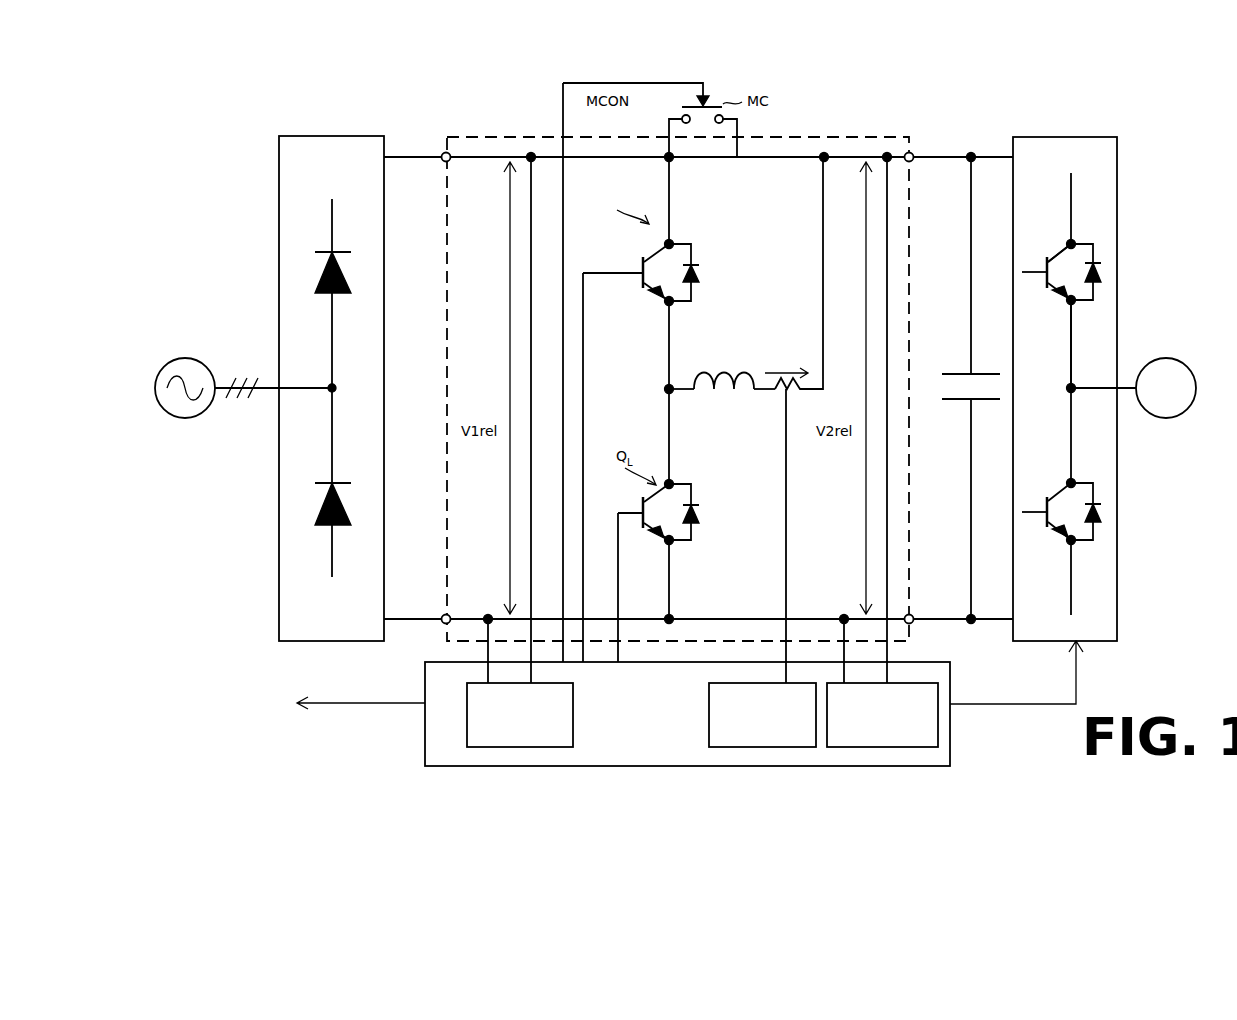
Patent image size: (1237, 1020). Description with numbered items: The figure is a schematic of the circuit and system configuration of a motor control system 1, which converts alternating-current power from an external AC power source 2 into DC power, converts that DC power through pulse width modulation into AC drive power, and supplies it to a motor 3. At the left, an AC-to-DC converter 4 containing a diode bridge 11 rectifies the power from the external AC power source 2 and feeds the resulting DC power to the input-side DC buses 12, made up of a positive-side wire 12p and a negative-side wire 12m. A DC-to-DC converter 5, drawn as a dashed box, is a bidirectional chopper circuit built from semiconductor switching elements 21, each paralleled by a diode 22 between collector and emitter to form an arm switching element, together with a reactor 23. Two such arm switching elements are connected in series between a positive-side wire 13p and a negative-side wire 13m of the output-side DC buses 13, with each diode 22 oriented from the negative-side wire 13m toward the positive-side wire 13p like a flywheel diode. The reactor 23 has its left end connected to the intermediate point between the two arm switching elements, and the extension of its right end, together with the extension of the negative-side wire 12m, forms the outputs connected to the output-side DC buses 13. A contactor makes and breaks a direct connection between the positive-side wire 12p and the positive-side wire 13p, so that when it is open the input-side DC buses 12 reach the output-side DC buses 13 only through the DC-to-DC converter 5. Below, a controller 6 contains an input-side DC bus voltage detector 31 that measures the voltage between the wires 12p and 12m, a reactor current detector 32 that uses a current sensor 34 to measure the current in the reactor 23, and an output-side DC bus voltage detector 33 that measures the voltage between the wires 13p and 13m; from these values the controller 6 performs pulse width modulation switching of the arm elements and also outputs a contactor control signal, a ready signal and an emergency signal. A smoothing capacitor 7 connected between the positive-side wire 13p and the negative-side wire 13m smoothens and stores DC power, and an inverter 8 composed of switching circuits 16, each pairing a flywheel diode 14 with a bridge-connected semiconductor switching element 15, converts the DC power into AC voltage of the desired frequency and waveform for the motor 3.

The motor control system 1 is at (1140, 150).
The external AC power source 2 is at (185, 357).
The motor 3 is at (1171, 357).
The AC-to-DC converter 4 is at (278, 178).
The DC-to-DC converter 5 is at (487, 133).
The controller 6 is at (690, 702).
The smoothing capacitor 7 is at (985, 372).
The inverter 8 is at (1118, 200).
The diode bridge 11 is at (303, 273).
The input-side DC buses 12 is at (371, 351).
The positive-side wire 12p is at (427, 155).
The negative-side wire 12m is at (413, 618).
The output-side DC buses 13 is at (980, 351).
The positive-side wire 13p is at (918, 155).
The negative-side wire 13m is at (930, 618).
The flywheel diode 14 is at (1098, 258).
The semiconductor switching element 15 is at (1047, 262).
The switching circuit 16 is at (1058, 235).
The semiconductor switching element 21 is at (641, 262).
The diode 22 is at (698, 262).
The reactor 23 is at (720, 370).
The input-side DC bus voltage detector 31 is at (467, 730).
The reactor current detector 32 is at (709, 725).
The output-side DC bus voltage detector 33 is at (938, 700).
The current sensor 34 is at (775, 393).